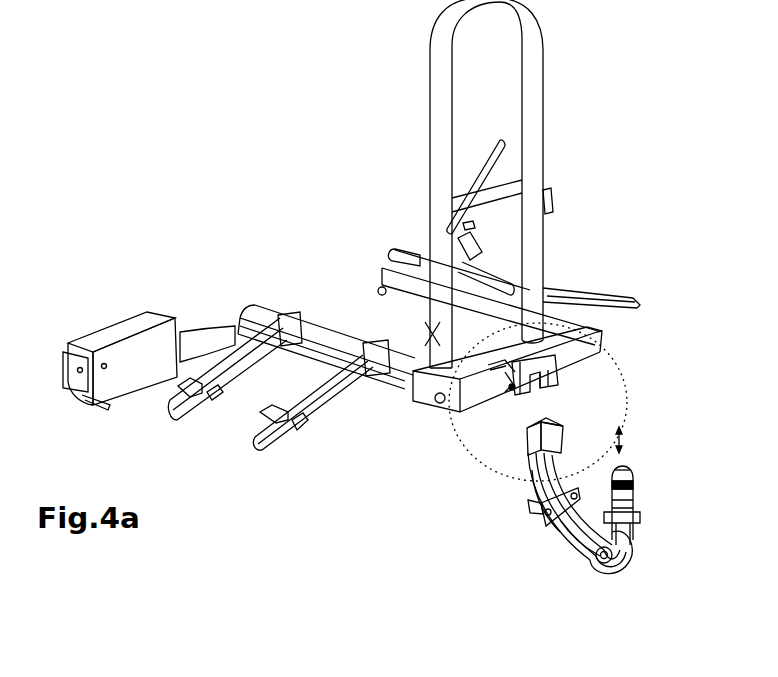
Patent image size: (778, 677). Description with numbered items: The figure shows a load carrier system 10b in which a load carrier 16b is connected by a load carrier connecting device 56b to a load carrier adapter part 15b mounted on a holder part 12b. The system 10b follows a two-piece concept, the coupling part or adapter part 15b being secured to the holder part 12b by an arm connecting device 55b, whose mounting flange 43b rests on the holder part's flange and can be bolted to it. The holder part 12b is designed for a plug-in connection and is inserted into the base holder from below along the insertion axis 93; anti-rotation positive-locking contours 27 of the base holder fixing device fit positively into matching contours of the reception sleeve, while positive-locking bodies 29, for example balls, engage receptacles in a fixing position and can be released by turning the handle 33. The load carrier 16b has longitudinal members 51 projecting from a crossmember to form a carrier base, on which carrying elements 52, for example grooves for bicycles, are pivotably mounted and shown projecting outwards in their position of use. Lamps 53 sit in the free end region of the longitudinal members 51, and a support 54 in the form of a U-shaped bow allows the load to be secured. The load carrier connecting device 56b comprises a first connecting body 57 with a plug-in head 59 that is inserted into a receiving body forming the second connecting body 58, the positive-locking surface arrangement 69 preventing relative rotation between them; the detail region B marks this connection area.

The load carrier system 10b is at (176, 124).
The holder part 12b is at (556, 547).
The load carrier adapter part 15b is at (522, 478).
The load carrier 16b is at (378, 252).
The anti-rotation positive-locking contours 27 is at (603, 517).
The positive-locking bodies 29 is at (610, 480).
The handle 33 is at (593, 570).
The mounting flange 43b is at (530, 519).
The longitudinal members 51 is at (327, 353).
The carrying elements 52 is at (260, 437).
The lamps 53 is at (121, 332).
The support 54 is at (537, 120).
The arm connecting device 55b is at (528, 520).
The load carrier connecting device 56b is at (565, 378).
The first connecting body 57 is at (530, 433).
The second connecting body 58 is at (515, 388).
The plug-in head 59 is at (557, 427).
The positive-locking surface arrangement 69 is at (535, 382).
The insertion axis 93 is at (623, 442).
The detail region B is at (472, 456).